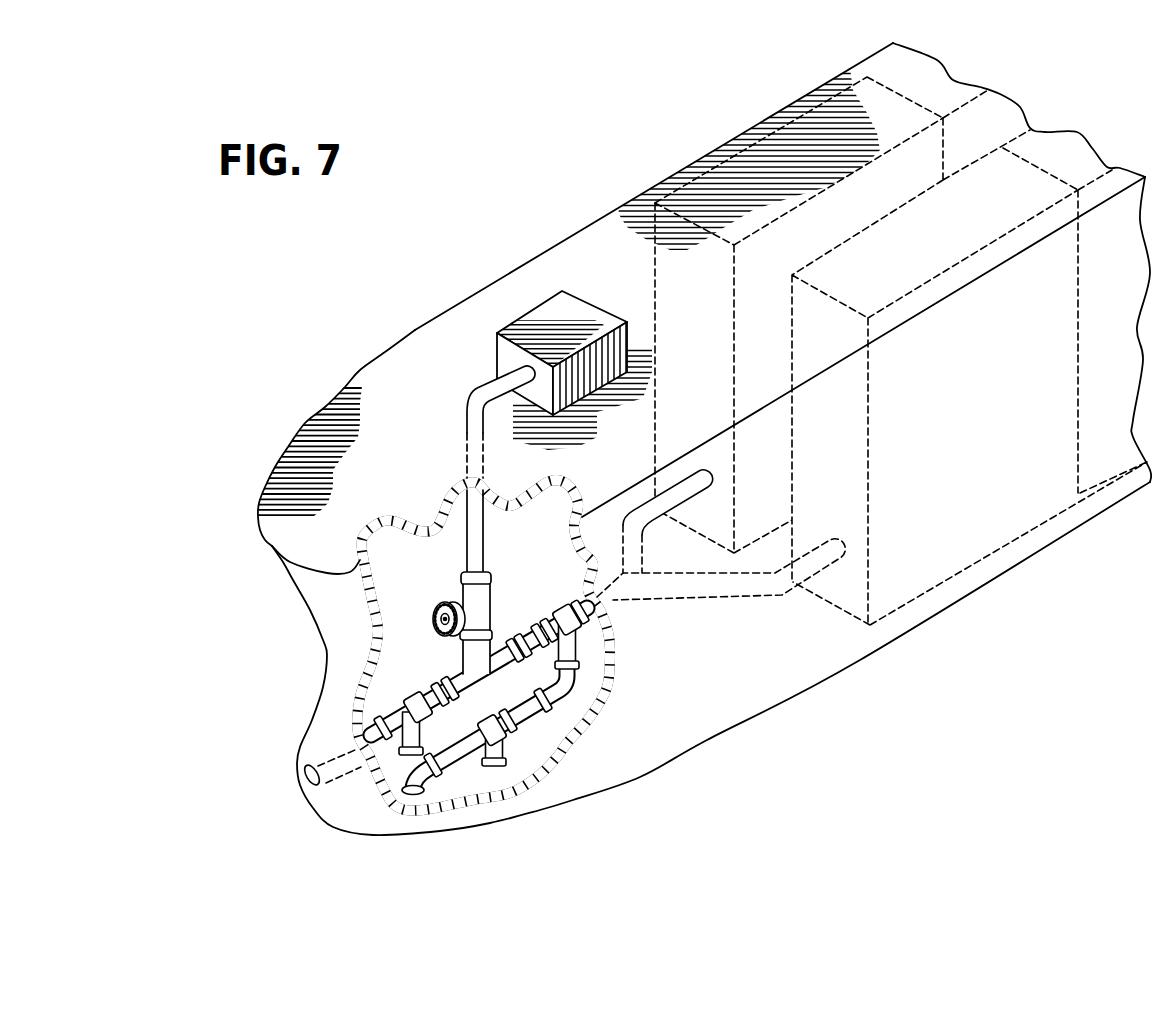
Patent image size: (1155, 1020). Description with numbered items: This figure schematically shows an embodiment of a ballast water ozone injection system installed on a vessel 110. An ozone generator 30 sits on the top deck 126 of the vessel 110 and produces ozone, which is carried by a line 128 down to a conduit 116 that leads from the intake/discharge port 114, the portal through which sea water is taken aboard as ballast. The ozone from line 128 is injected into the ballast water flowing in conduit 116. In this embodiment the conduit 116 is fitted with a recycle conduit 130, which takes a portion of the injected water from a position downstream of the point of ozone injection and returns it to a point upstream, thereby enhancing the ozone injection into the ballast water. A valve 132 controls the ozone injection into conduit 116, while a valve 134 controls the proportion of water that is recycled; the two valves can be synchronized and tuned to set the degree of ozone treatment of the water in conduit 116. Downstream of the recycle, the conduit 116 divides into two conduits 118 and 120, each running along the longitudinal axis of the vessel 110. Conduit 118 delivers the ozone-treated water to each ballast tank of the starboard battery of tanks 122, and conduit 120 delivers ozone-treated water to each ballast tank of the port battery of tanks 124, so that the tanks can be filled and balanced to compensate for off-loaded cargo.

The ozone generator 30 is at (563, 313).
The vessel 110 is at (495, 277).
The intake/discharge port 114 is at (300, 777).
The conduit 116 is at (540, 640).
The conduit 118 is at (727, 583).
The conduit 120 is at (680, 487).
The starboard battery of tanks 122 is at (973, 515).
The port battery of tanks 124 is at (750, 173).
The top deck 126 is at (373, 390).
The line 128 is at (470, 540).
The recycle conduit 130 is at (530, 717).
The valve 132 is at (433, 617).
The valve 134 is at (503, 752).